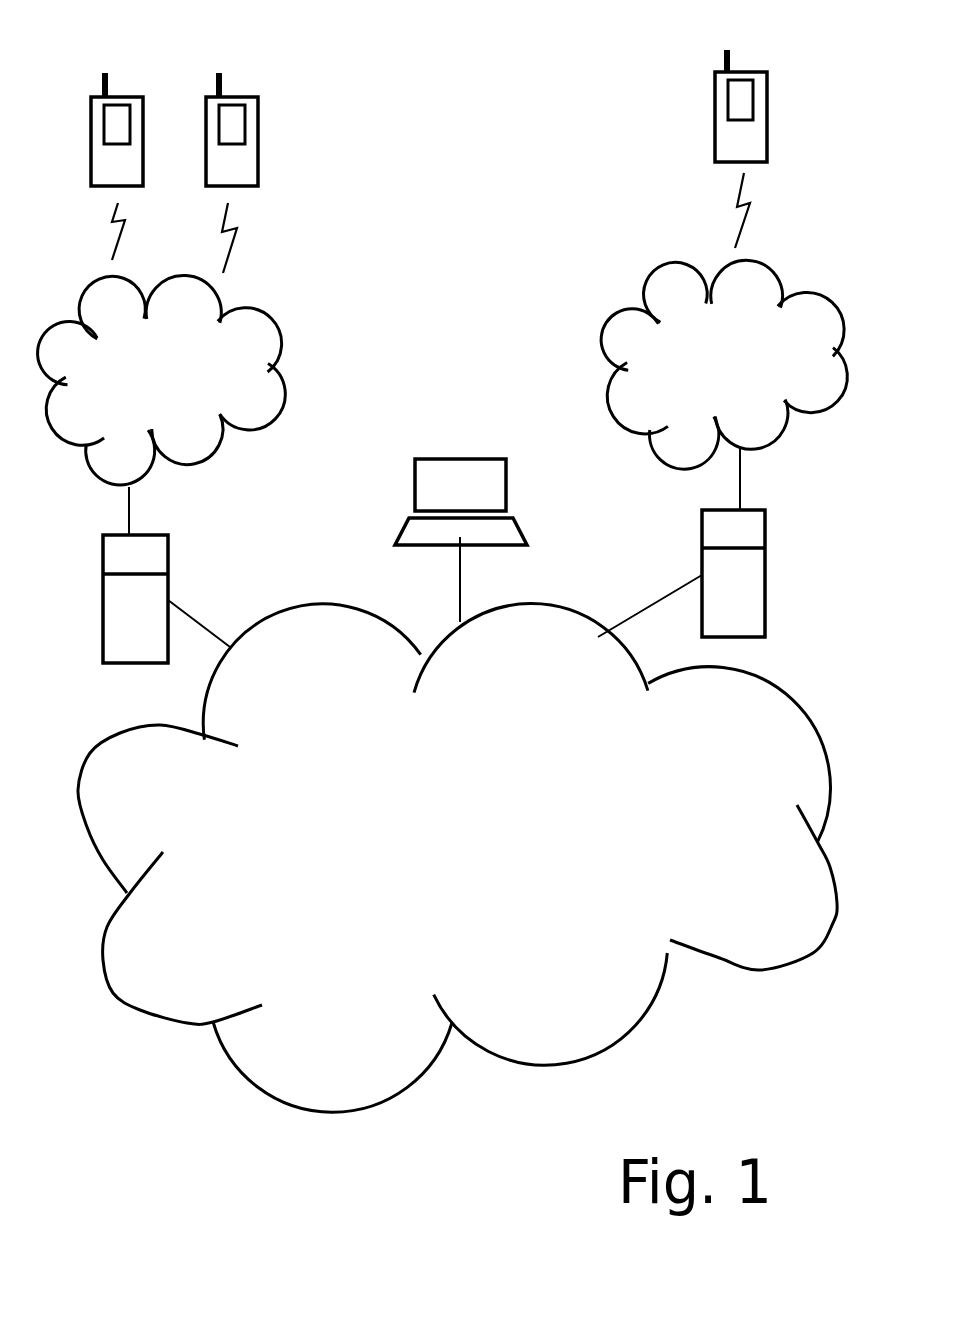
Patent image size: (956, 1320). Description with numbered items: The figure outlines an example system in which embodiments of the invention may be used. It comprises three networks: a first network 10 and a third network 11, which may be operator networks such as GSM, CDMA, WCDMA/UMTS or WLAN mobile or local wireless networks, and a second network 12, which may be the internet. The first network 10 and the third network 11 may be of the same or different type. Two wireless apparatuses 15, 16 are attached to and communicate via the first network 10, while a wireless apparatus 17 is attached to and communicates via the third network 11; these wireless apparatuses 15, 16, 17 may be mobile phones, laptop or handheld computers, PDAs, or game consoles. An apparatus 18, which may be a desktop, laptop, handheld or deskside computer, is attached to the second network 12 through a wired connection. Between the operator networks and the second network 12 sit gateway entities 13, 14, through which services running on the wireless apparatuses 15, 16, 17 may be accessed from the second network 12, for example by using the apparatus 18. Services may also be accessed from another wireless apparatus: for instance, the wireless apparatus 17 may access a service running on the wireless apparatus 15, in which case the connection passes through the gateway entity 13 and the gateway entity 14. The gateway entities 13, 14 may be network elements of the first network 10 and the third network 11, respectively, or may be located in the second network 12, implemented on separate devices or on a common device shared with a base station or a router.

The first network 10 is at (266, 310).
The third network 11 is at (805, 288).
The second network 12 is at (793, 698).
The gateway entity 13 is at (168, 545).
The gateway entity 14 is at (765, 549).
The wireless apparatus 15 is at (118, 94).
The wireless apparatus 16 is at (243, 94).
The wireless apparatus 17 is at (749, 70).
The apparatus 18 is at (448, 459).